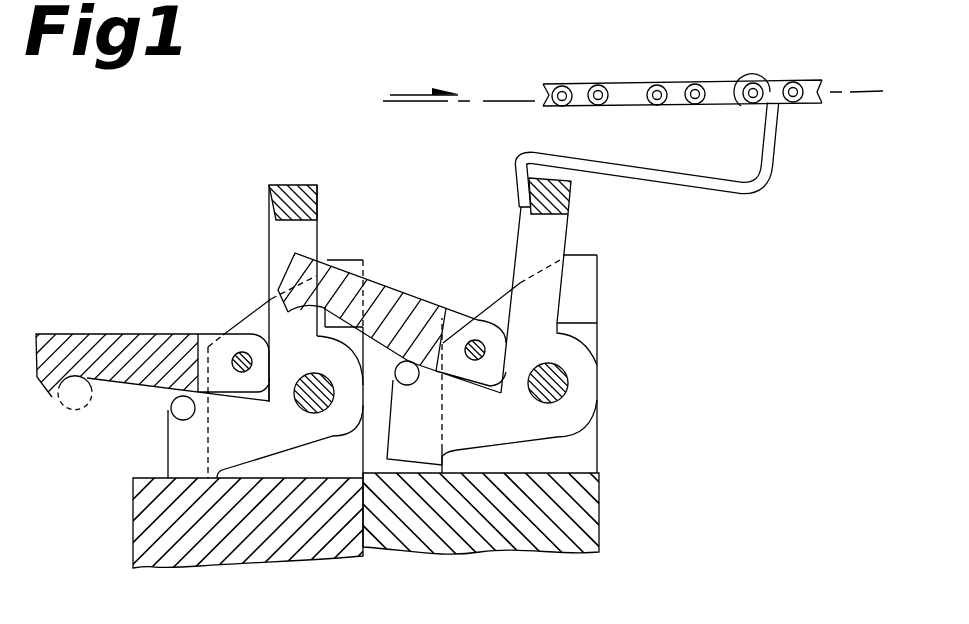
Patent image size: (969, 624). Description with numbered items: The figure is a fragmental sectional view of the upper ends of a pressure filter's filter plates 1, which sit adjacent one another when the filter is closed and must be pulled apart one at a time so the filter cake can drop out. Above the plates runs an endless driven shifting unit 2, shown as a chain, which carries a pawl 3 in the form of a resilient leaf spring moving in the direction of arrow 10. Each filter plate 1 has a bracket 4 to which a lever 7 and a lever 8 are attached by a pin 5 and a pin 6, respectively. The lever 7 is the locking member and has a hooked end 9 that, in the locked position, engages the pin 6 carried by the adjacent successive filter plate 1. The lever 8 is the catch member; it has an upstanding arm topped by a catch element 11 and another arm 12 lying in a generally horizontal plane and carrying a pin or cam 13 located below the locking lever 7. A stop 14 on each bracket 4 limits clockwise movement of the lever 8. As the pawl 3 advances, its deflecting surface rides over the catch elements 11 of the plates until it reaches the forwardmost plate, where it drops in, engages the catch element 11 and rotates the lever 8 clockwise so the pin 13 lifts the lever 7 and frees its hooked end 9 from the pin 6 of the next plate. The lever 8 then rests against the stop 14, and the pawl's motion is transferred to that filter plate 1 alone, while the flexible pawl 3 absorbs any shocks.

The filter plate 1 is at (133, 505).
The driven shifting unit 2 is at (640, 78).
The pawl 3 is at (648, 164).
The bracket 4 is at (593, 440).
The pin 5 is at (242, 352).
The pin 6 is at (85, 408).
The lever 7 is at (120, 334).
The lever 8 is at (316, 232).
The hooked end 9 is at (50, 397).
The arrow 10 is at (408, 93).
The catch element 11 is at (304, 185).
The arm 12 is at (168, 460).
The pin or cam 13 is at (171, 408).
The stop 14 is at (348, 258).